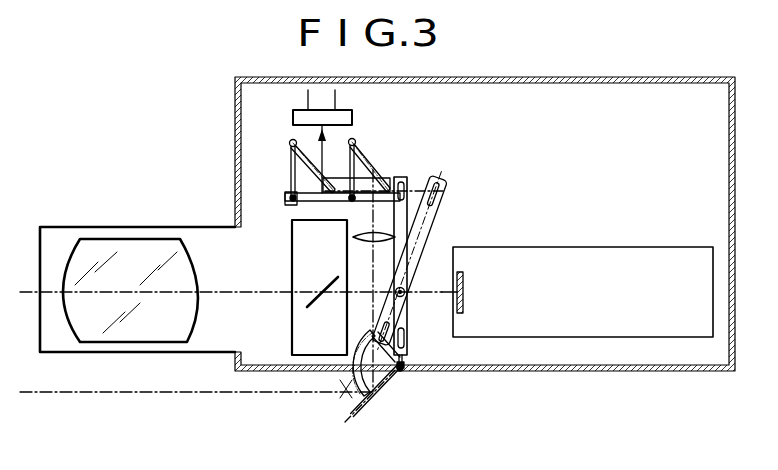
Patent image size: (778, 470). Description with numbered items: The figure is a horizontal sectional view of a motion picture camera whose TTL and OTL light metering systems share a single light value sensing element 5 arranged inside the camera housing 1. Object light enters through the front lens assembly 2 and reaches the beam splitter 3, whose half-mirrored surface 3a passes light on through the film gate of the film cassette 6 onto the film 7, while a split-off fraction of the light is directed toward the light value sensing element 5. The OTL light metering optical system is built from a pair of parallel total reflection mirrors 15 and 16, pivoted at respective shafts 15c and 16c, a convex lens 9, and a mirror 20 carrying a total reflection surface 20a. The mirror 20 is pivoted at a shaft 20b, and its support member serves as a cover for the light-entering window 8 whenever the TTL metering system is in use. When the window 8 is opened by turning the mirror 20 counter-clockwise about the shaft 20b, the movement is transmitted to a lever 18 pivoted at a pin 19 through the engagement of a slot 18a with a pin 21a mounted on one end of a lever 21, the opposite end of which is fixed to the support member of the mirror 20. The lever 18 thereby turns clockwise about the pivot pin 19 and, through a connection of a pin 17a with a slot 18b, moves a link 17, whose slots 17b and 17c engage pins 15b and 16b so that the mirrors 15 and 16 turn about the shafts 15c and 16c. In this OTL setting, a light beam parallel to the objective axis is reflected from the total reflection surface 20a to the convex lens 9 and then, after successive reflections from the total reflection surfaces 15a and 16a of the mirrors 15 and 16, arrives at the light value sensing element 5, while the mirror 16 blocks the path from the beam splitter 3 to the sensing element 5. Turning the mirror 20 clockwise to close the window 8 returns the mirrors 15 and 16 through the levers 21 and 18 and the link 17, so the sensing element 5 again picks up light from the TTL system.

The housing 1 is at (550, 77).
The front lens assembly 2 is at (130, 250).
The beam splitter 3 is at (292, 285).
The half-mirrored surface 3a is at (316, 302).
The light value sensing element 5 is at (345, 112).
The film cassette 6 is at (587, 258).
The film 7 is at (468, 288).
The light-entering window 8 is at (347, 384).
The convex lens 9 is at (372, 243).
The total reflection mirror 15 is at (350, 161).
The total reflection surface 15a is at (363, 160).
The pin 15b is at (350, 202).
The pivot shaft 15c is at (355, 141).
The total reflection mirror 16 is at (290, 158).
The total reflection surface 16a is at (311, 179).
The pin 16b is at (291, 201).
The pivot shaft 16c is at (292, 138).
The link 17 is at (341, 199).
The pin 17a is at (438, 186).
The slot 17b is at (351, 203).
The slot 17c is at (288, 205).
The lever 18 is at (408, 228).
The slot 18a is at (406, 336).
The slot 18b is at (405, 184).
The pivot pin 19 is at (405, 290).
The mirror 20 is at (358, 378).
The total reflection surface 20a is at (392, 373).
The pivot shaft 20b is at (403, 372).
The lever 21 is at (407, 364).
The pin 21a is at (393, 325).